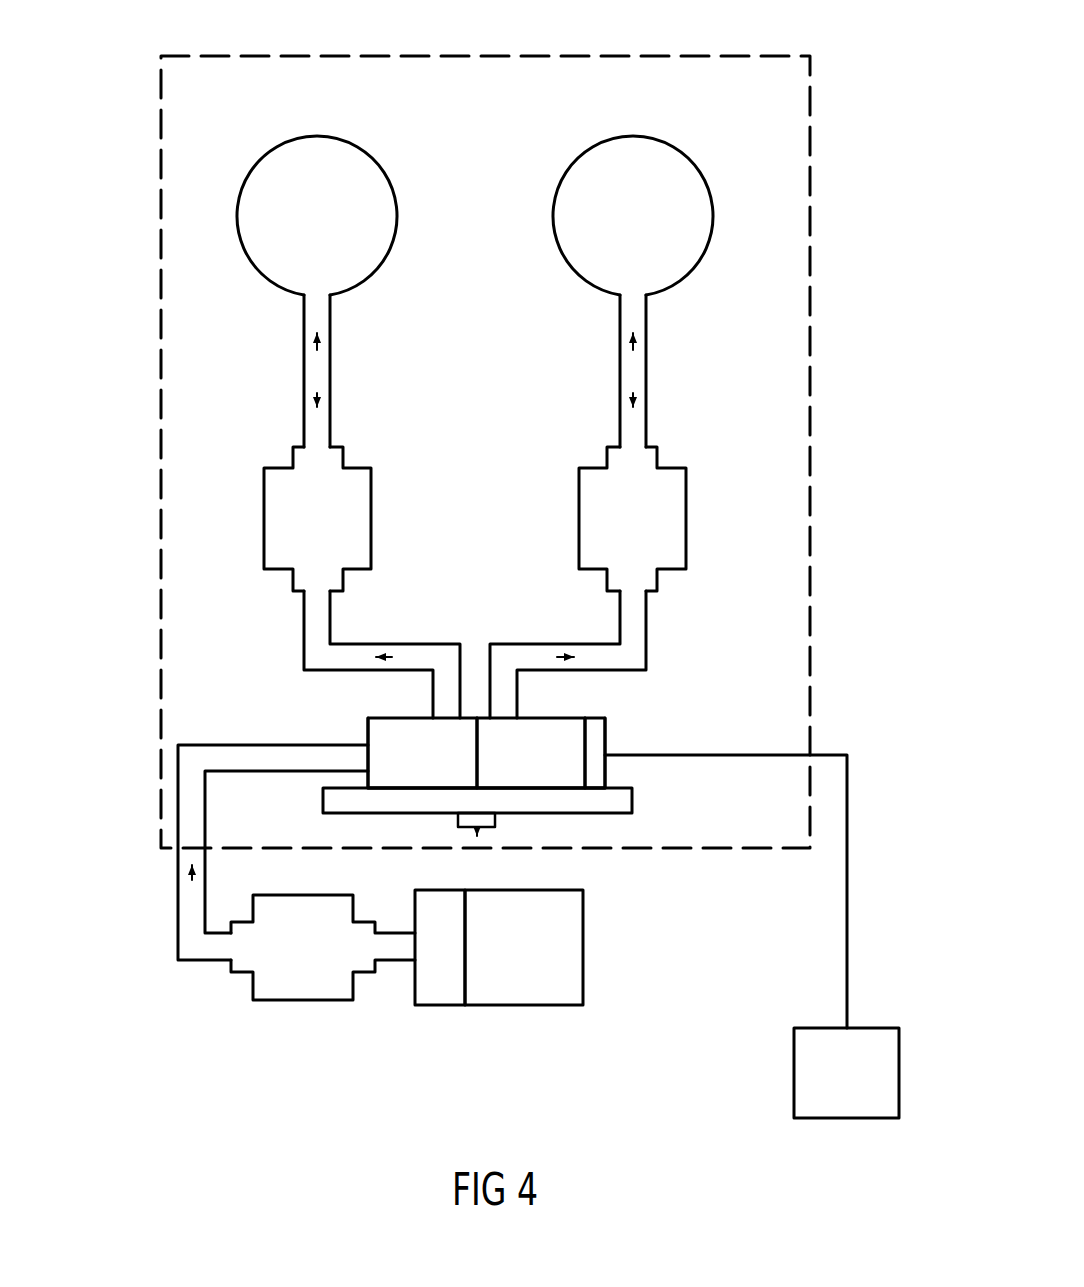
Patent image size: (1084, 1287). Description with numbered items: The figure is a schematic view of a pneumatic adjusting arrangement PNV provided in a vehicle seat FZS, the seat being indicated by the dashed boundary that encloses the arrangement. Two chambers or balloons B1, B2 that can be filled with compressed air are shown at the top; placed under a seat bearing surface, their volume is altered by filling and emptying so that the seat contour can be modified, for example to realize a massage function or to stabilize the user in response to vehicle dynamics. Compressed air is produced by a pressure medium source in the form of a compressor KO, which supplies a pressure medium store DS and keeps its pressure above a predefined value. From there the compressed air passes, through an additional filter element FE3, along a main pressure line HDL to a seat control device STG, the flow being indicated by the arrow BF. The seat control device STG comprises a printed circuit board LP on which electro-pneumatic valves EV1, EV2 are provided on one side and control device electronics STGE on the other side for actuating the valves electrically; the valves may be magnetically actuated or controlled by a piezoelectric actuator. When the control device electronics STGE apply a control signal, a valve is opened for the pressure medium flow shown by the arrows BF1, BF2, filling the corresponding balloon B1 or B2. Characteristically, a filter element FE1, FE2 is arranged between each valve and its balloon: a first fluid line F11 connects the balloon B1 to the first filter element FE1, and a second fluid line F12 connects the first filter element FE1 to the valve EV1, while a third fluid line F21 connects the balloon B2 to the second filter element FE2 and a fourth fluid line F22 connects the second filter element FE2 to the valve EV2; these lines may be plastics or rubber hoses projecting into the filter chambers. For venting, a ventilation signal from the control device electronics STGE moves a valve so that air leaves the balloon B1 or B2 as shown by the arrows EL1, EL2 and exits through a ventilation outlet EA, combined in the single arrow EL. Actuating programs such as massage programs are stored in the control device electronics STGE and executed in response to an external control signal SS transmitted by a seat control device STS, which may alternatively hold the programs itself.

The vehicle seat FZS is at (810, 518).
The balloon B1 is at (316, 138).
The balloon B2 is at (633, 138).
The first fluid line F11 is at (318, 368).
The third fluid line F21 is at (634, 369).
The second fluid line F12 is at (407, 642).
The fourth fluid line F22 is at (647, 618).
The first filter element FE1 is at (371, 477).
The second filter element FE2 is at (686, 518).
The filter element FE3 is at (302, 1001).
The arrow BF1 is at (316, 339).
The arrow BF2 is at (647, 338).
The arrow EL1 is at (316, 400).
The arrow EL2 is at (647, 402).
The electro-pneumatic valve EV1 is at (377, 718).
The electro-pneumatic valve EV2 is at (580, 717).
The seat control device STG is at (630, 835).
The control device electronics STGE is at (605, 733).
The printed circuit board LP is at (632, 800).
The ventilation outlet EA is at (495, 820).
The arrow EL is at (483, 832).
The main pressure line HDL is at (178, 813).
The arrow BF is at (180, 868).
The pressure medium store DS is at (438, 1006).
The compressor KO is at (543, 1006).
The external control signal SS is at (848, 852).
The seat control device STS is at (852, 1025).
The pneumatic adjusting arrangement PNV is at (785, 614).